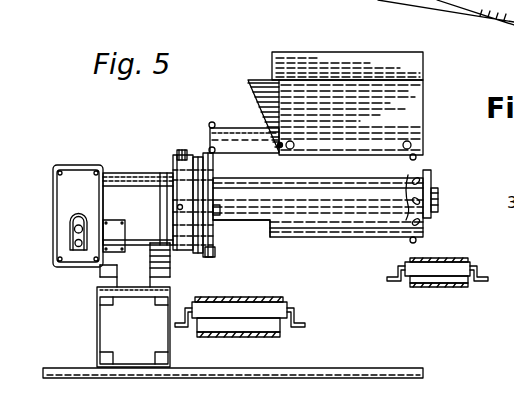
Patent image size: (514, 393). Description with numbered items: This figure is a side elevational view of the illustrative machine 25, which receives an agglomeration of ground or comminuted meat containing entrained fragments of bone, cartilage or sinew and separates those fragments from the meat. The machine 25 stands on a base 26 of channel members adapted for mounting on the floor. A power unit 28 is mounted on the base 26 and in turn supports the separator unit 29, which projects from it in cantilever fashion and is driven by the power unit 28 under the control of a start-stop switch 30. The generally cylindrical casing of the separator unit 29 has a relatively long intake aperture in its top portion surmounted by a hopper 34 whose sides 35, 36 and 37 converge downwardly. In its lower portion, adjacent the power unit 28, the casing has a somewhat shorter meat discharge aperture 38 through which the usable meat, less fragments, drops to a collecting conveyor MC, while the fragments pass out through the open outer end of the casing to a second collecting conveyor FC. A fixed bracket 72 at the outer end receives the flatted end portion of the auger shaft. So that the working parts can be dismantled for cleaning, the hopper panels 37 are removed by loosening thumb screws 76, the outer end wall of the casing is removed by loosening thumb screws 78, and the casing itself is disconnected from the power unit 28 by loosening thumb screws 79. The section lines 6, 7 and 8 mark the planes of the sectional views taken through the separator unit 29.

The machine 25 is at (130, 120).
The base 26 is at (93, 328).
The power unit 28 is at (127, 170).
The separator unit 29 is at (303, 239).
The start-stop switch 30 is at (65, 200).
The hopper 34 is at (397, 48).
The hopper side 35 is at (412, 62).
The hopper side 36 is at (258, 80).
The hopper panel 37 is at (405, 108).
The meat discharge aperture 38 is at (263, 226).
The fixed bracket 72 is at (435, 214).
The thumb screws 76 is at (291, 143).
The thumb screws 78 is at (417, 181).
The thumb screws 79 is at (212, 148).
The section line 6- 6 is at (238, 203).
The section line 7- 7 is at (322, 27).
The section line 8- 8 is at (250, 103).
The conveyor MC is at (255, 297).
The conveyor FC is at (452, 258).